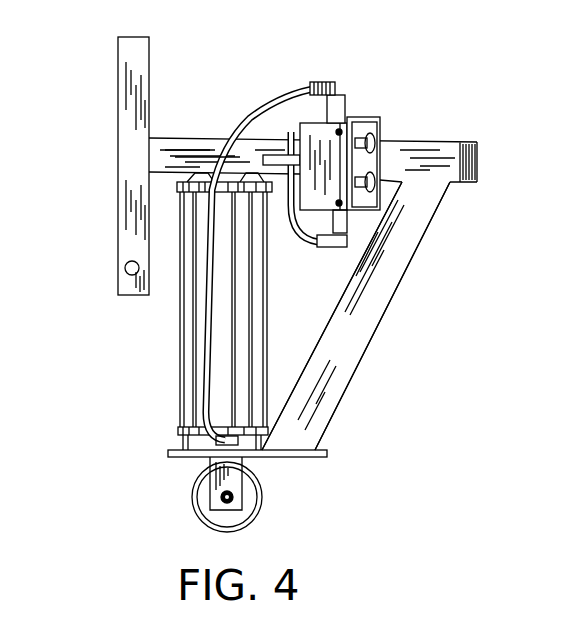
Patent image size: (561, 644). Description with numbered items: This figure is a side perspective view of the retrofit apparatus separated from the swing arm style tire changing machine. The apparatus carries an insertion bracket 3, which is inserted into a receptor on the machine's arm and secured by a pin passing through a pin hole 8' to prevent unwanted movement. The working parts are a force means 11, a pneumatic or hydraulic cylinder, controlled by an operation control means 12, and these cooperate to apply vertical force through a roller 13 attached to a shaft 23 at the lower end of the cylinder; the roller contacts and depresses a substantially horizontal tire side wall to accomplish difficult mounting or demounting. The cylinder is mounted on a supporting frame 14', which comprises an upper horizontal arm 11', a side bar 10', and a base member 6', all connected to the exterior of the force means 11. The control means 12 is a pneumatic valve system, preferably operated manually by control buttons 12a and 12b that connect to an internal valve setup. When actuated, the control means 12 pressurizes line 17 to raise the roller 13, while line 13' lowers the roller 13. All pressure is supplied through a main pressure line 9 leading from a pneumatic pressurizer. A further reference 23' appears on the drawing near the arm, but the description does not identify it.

The insertion bracket 3 is at (122, 132).
The pin hole 8' is at (110, 248).
The side bar 10' is at (368, 316).
The supporting frame 14' is at (397, 316).
The force means 11 is at (172, 311).
The base member 6' is at (275, 466).
The roller 13 is at (284, 494).
The line 17 is at (250, 112).
The upper horizontal arm 11' is at (292, 141).
The operation control means 12 is at (353, 117).
The main pressure line 9 is at (343, 97).
The control button 12a is at (383, 138).
The control button 12b is at (383, 182).
The line 13' is at (317, 272).
The arm 23' is at (202, 111).
The shaft 23 is at (177, 469).